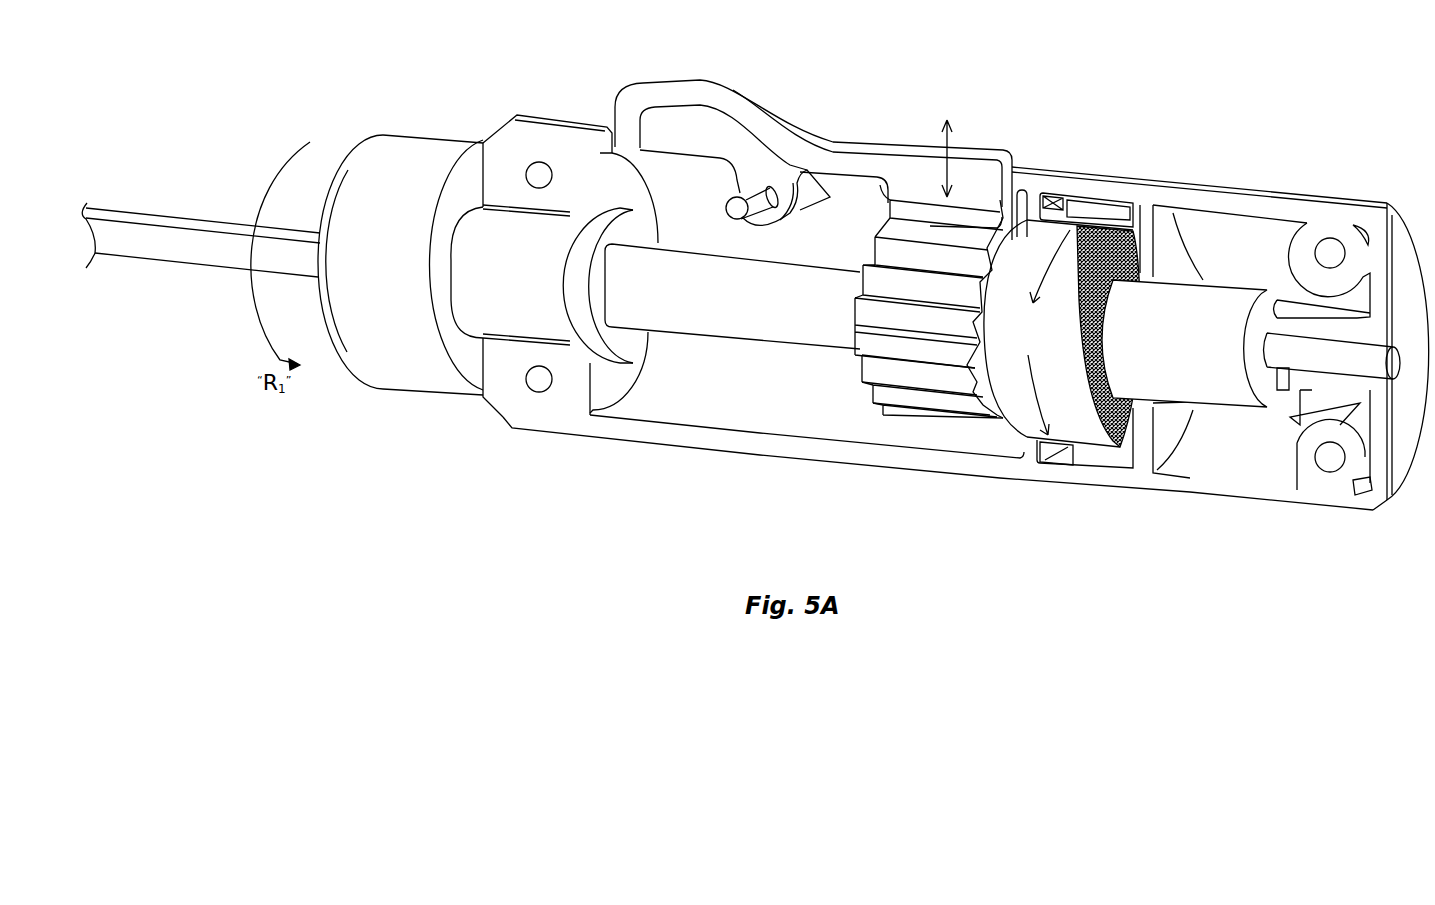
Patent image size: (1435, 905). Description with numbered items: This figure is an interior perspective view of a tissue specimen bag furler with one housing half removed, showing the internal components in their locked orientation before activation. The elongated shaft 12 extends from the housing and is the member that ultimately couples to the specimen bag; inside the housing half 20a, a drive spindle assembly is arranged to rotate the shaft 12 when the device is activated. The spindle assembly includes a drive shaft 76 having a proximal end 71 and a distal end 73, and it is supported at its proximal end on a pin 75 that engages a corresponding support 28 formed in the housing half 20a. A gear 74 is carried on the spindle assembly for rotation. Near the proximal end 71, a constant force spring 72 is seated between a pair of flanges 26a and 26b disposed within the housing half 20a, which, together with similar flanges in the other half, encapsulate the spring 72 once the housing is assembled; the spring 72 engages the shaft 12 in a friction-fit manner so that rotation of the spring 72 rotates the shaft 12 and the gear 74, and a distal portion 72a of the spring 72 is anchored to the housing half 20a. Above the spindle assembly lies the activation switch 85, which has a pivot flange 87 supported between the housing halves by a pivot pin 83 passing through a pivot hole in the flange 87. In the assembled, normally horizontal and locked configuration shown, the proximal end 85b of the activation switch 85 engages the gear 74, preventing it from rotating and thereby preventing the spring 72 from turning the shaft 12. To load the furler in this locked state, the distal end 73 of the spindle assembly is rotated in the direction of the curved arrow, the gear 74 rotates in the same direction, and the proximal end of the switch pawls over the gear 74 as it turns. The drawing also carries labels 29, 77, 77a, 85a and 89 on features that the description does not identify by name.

The elongated shaft 12 is at (178, 222).
The housing half 20a is at (1357, 197).
The flange 26a is at (1060, 205).
The flange 26b is at (1178, 240).
The support 28 is at (1368, 478).
The mounting plate 29 is at (570, 135).
The proximal end 71 is at (1200, 390).
The constant force spring 72 is at (1072, 432).
The distal portion 72a is at (1112, 215).
The distal end 73 is at (397, 372).
The gear 74 is at (947, 397).
The pin 75 is at (1293, 357).
The drive shaft 76 is at (710, 323).
The bearing boss 77 is at (577, 347).
The bracket 77a is at (509, 323).
The pivot pin 83 is at (747, 195).
The activation switch 85 is at (904, 126).
The frame hump 85a is at (692, 86).
The proximal end 85b is at (983, 212).
The pivot flange 87 is at (784, 179).
The shaft 89 is at (778, 232).